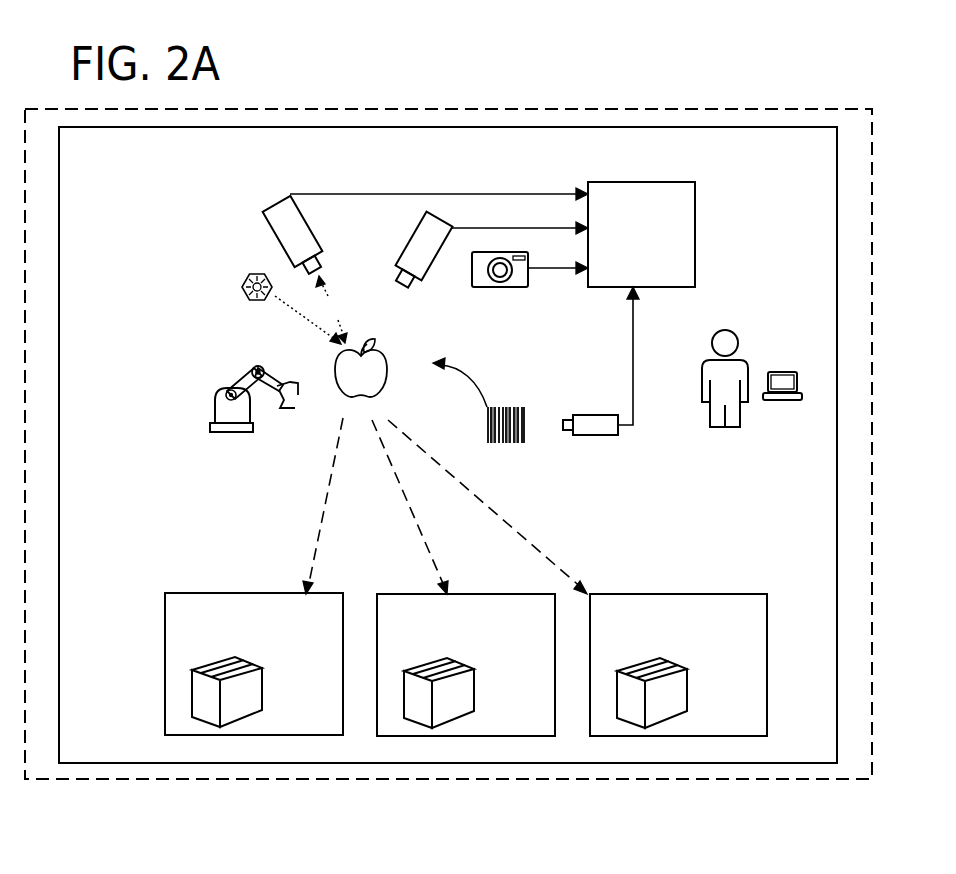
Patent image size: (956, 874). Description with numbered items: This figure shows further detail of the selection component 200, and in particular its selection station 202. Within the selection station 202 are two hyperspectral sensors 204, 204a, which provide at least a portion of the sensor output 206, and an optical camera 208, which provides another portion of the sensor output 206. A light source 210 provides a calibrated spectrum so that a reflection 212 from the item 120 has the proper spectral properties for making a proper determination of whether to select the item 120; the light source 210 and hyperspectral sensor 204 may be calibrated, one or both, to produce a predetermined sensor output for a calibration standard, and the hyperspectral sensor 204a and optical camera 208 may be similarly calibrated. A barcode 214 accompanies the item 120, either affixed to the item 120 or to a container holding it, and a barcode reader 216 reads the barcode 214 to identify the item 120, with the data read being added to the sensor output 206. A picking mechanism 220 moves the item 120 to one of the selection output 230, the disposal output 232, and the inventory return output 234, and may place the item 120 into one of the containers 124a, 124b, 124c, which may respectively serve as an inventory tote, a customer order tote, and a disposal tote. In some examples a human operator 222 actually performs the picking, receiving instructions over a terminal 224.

The selection component 200 is at (710, 78).
The selection station 202 is at (324, 158).
The hyperspectral sensor 204 is at (264, 212).
The hyperspectral sensor 204a is at (395, 262).
The sensor output 206 is at (688, 281).
The optical camera 208 is at (498, 288).
The light source 210 is at (242, 283).
The reflection 212 is at (314, 310).
The item 120 is at (373, 388).
The barcode 214 is at (503, 445).
The barcode reader 216 is at (613, 437).
The picking mechanism 220 is at (245, 433).
The human operator 222 is at (725, 378).
The terminal 224 is at (775, 402).
The selection output 230 is at (547, 625).
The disposal output 232 is at (760, 625).
The inventory return output 234 is at (336, 625).
The container 124a is at (255, 662).
The container 124b is at (467, 662).
The container 124c is at (680, 662).